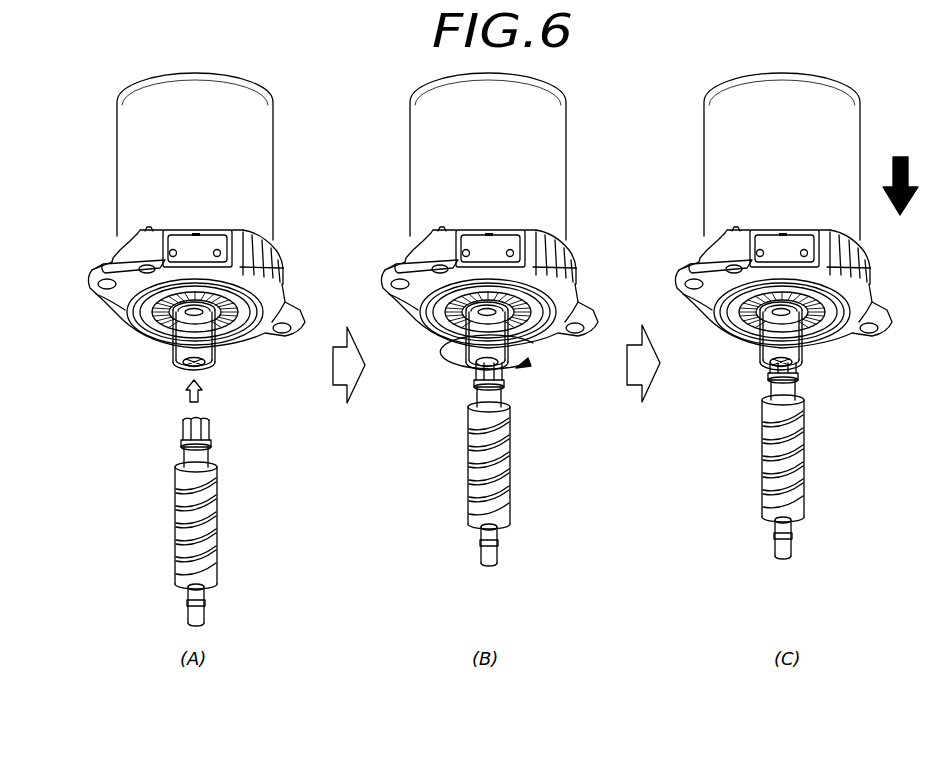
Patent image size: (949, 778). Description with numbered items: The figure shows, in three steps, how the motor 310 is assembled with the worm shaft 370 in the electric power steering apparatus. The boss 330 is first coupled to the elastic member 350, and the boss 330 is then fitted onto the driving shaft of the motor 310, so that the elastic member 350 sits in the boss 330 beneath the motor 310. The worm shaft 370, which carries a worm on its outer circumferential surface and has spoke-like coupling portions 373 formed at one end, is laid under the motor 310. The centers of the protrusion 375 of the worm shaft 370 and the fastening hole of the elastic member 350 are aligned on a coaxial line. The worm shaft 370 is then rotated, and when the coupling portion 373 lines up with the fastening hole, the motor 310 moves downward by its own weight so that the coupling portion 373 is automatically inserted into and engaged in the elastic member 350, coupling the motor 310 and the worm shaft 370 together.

The motor 310 is at (125, 170).
The boss 330 is at (177, 349).
The elastic member 350 is at (208, 369).
The worm shaft 370 is at (160, 508).
The coupling portion 373 is at (205, 432).
The protrusion 375 is at (190, 418).